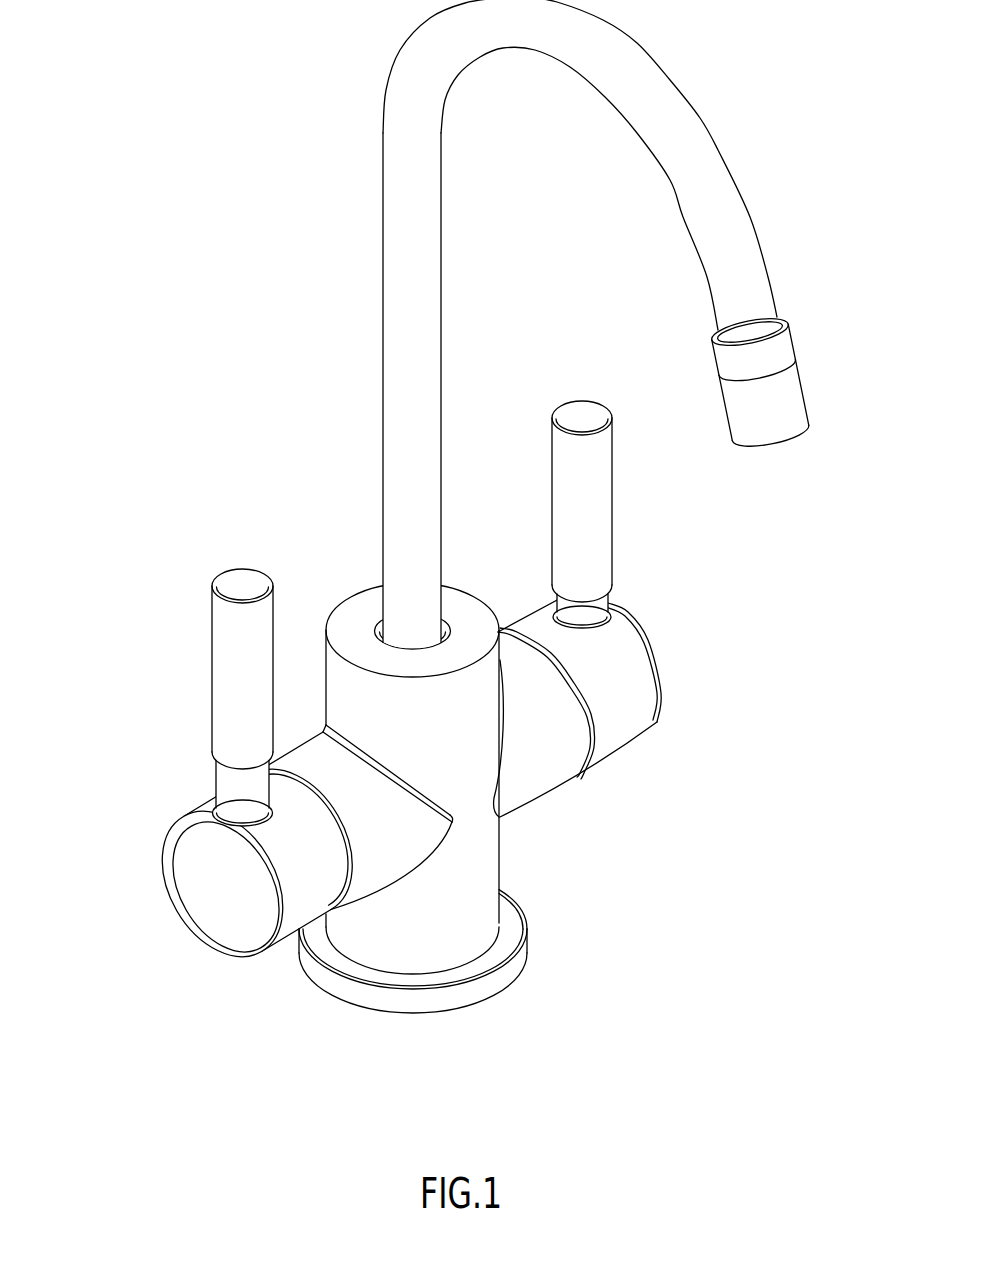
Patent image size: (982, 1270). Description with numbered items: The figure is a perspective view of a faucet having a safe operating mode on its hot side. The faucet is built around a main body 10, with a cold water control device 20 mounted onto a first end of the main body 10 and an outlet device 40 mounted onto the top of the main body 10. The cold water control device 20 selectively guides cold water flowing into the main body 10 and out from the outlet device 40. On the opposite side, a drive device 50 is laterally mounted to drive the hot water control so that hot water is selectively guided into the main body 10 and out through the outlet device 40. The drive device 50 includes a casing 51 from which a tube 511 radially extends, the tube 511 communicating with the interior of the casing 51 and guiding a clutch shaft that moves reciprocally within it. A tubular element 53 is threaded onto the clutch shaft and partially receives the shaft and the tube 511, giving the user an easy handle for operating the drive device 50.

The main body 10 is at (488, 862).
The cold water control device 20 is at (660, 645).
The outlet device 40 is at (389, 343).
The drive device 50 is at (182, 930).
The casing 51 is at (243, 942).
The tube 511 is at (225, 789).
The tubular element 53 is at (218, 670).